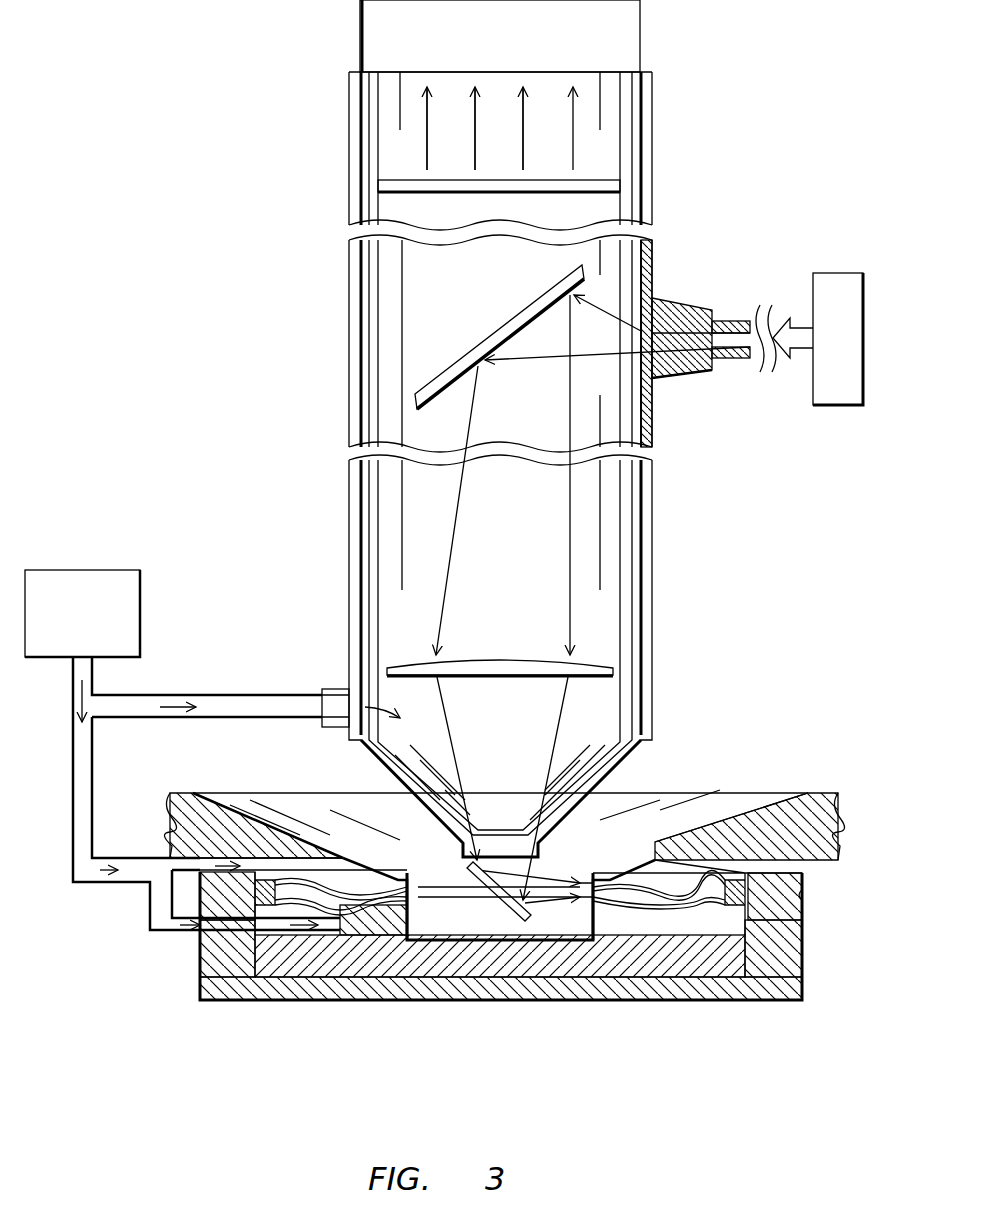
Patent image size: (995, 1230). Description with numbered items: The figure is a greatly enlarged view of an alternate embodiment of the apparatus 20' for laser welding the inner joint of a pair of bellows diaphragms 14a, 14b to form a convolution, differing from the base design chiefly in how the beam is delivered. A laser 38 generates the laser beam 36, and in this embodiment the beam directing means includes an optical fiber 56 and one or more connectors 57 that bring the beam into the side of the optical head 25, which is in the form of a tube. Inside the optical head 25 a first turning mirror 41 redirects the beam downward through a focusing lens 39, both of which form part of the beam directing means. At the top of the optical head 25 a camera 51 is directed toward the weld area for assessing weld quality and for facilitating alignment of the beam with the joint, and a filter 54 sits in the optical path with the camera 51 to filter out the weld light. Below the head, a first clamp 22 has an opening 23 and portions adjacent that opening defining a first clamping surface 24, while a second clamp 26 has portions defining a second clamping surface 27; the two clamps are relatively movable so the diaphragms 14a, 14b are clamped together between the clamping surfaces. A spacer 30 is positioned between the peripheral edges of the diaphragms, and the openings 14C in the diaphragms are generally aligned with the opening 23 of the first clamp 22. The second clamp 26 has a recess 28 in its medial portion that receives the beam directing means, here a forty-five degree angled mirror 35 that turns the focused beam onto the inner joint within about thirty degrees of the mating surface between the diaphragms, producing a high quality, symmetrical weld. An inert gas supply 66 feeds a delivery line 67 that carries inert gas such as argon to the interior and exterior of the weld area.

The apparatus 20' is at (204, 24).
The camera 51 is at (645, 42).
The optical head 25 is at (348, 123).
The filter 54 is at (600, 182).
The first turning mirror 41 is at (455, 355).
The optical fiber 56 is at (730, 318).
The connector 57 is at (670, 300).
The laser 38 is at (838, 406).
The laser beam 36 is at (553, 585).
The focusing lens 39 is at (395, 660).
The opening 23 is at (478, 860).
The inert gas supply 66 is at (82, 570).
The line 67 is at (73, 760).
The first clamp 22 is at (790, 797).
The first clamping surface 24 is at (395, 870).
The second clamp 26 is at (737, 1006).
The recess 28 is at (560, 950).
The angled mirror 35 is at (497, 945).
The spacer 30 is at (768, 897).
The openings 14C is at (400, 905).
The diaphragm 14b is at (690, 908).
The diaphragm 14a is at (690, 868).
The second clamping surface 27 is at (345, 908).